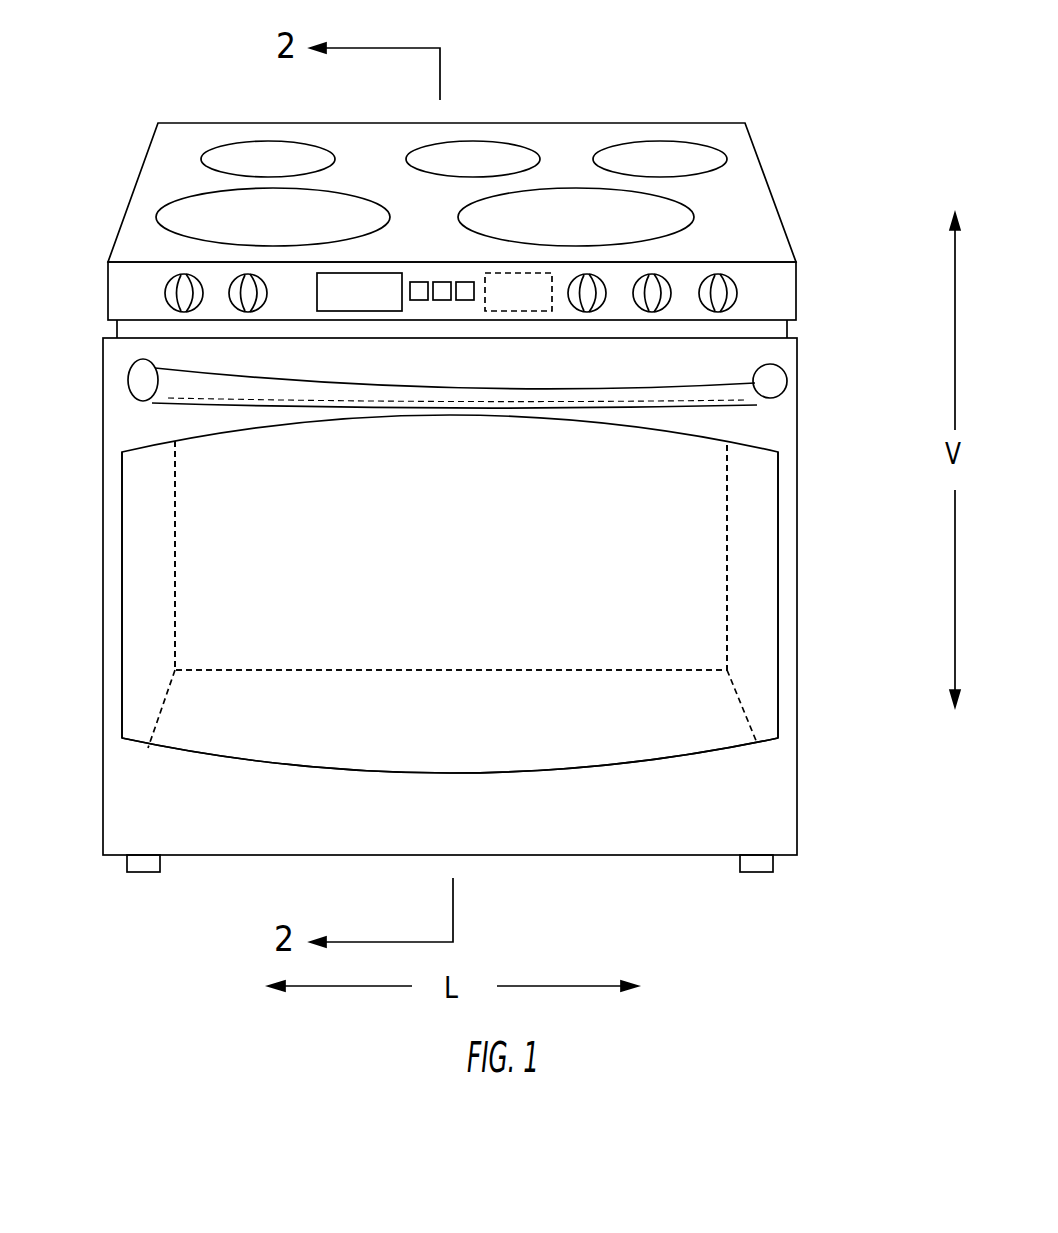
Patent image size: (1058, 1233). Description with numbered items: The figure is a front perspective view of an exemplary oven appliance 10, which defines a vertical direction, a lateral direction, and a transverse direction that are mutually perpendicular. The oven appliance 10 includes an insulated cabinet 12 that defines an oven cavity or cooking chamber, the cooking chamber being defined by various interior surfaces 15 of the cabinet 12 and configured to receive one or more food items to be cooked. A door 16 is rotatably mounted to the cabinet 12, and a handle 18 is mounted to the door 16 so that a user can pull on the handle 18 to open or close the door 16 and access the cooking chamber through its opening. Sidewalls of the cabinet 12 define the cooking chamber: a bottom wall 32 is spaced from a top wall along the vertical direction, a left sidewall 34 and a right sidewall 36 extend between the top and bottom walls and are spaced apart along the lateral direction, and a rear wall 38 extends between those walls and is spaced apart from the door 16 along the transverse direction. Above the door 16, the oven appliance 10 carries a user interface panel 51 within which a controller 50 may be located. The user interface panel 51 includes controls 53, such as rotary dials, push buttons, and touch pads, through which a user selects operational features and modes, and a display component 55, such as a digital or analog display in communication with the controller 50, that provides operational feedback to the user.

The oven appliance 10 is at (790, 96).
The insulated cabinet 12 is at (132, 328).
The interior surfaces 15 is at (200, 718).
The door 16 is at (777, 355).
The handle 18 is at (183, 392).
The bottom wall 32 is at (567, 755).
The left sidewall 34 is at (150, 570).
The right sidewall 36 is at (745, 578).
The rear wall 38 is at (657, 497).
The controller 50 is at (527, 273).
The user interface panel 51 is at (440, 312).
The controls 53 is at (723, 275).
The display component 55 is at (383, 273).